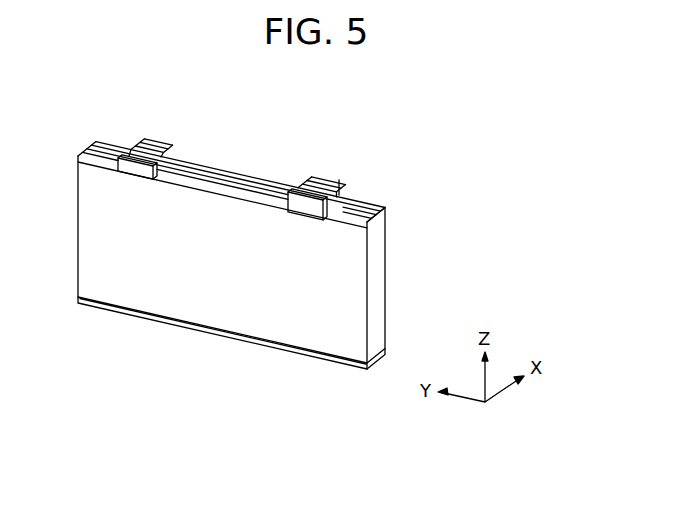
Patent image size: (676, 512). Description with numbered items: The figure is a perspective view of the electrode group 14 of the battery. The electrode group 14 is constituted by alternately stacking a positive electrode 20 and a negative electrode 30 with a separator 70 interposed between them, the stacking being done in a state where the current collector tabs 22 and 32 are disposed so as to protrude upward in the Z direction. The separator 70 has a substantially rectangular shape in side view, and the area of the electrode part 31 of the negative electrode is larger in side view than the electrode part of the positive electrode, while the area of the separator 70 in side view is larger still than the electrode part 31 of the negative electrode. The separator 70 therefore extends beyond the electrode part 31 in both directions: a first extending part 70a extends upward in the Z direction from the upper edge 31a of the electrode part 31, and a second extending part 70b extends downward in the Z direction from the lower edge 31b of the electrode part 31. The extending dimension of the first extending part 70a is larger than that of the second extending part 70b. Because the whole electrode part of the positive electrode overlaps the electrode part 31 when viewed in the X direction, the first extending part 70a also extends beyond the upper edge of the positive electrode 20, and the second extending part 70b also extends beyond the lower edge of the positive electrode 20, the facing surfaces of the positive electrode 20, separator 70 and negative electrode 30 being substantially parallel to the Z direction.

The electrode group 14 is at (243, 128).
The positive electrode 20 is at (148, 134).
The current collector tab 22 is at (155, 134).
The negative electrode 30 is at (345, 178).
The electrode part 31 is at (325, 313).
The upper edge 31a is at (285, 185).
The lower edge 31b is at (243, 343).
The current collector tab 32 is at (328, 172).
The separator 70 is at (205, 187).
The first extending part 70a is at (241, 197).
The second extending part 70b is at (168, 327).